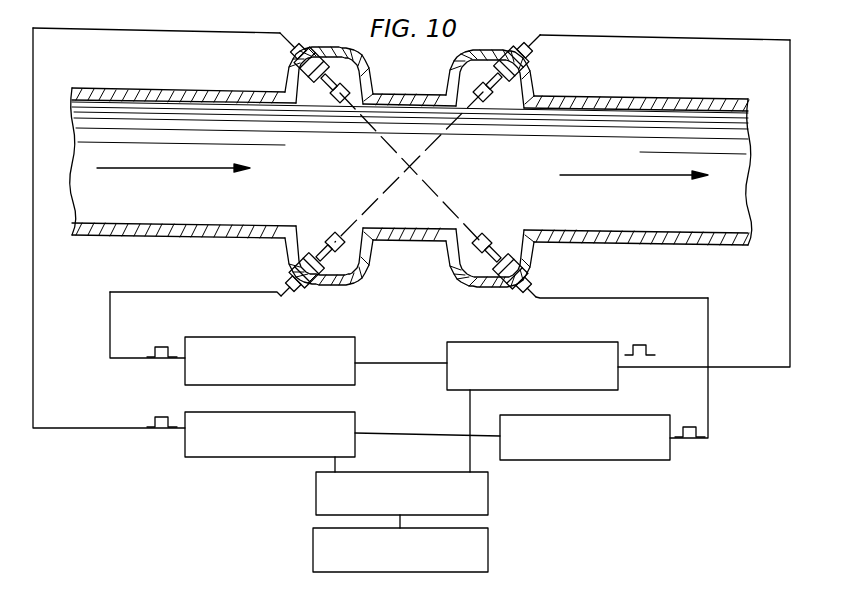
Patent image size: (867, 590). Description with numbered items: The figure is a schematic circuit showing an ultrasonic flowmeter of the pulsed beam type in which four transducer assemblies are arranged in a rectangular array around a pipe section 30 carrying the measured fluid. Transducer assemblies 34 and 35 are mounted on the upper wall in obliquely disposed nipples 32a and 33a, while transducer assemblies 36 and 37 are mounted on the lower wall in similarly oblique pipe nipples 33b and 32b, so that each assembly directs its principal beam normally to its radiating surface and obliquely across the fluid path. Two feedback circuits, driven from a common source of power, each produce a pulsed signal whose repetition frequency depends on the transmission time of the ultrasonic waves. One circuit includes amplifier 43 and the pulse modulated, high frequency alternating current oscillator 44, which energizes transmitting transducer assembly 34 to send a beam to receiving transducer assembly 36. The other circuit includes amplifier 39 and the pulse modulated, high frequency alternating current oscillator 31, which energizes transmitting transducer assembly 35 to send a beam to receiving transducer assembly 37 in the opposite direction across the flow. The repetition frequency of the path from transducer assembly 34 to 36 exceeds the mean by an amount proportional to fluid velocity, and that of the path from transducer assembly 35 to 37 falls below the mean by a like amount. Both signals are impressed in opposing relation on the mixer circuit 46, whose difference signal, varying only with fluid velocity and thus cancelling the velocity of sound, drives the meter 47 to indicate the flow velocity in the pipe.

The pipe section 30 is at (419, 92).
The pulse modulated, high frequency alternating current oscillator 31 is at (478, 345).
The nipple 32a is at (373, 58).
The pipe nipple 32b is at (356, 268).
The nipple 33a is at (482, 54).
The pipe nipple 33b is at (470, 282).
The transmitting transducer assembly 34 is at (341, 82).
The transmitting transducer assembly 35 is at (484, 104).
The receiving transducer assembly 36 is at (487, 232).
The receiving transducer assembly 37 is at (333, 232).
The amplifier 39 is at (338, 345).
The amplifier 43 is at (660, 459).
The pulse modulated, high frequency alternating current oscillator 44 is at (200, 447).
The mixer circuit 46 is at (485, 492).
The meter 47 is at (478, 550).